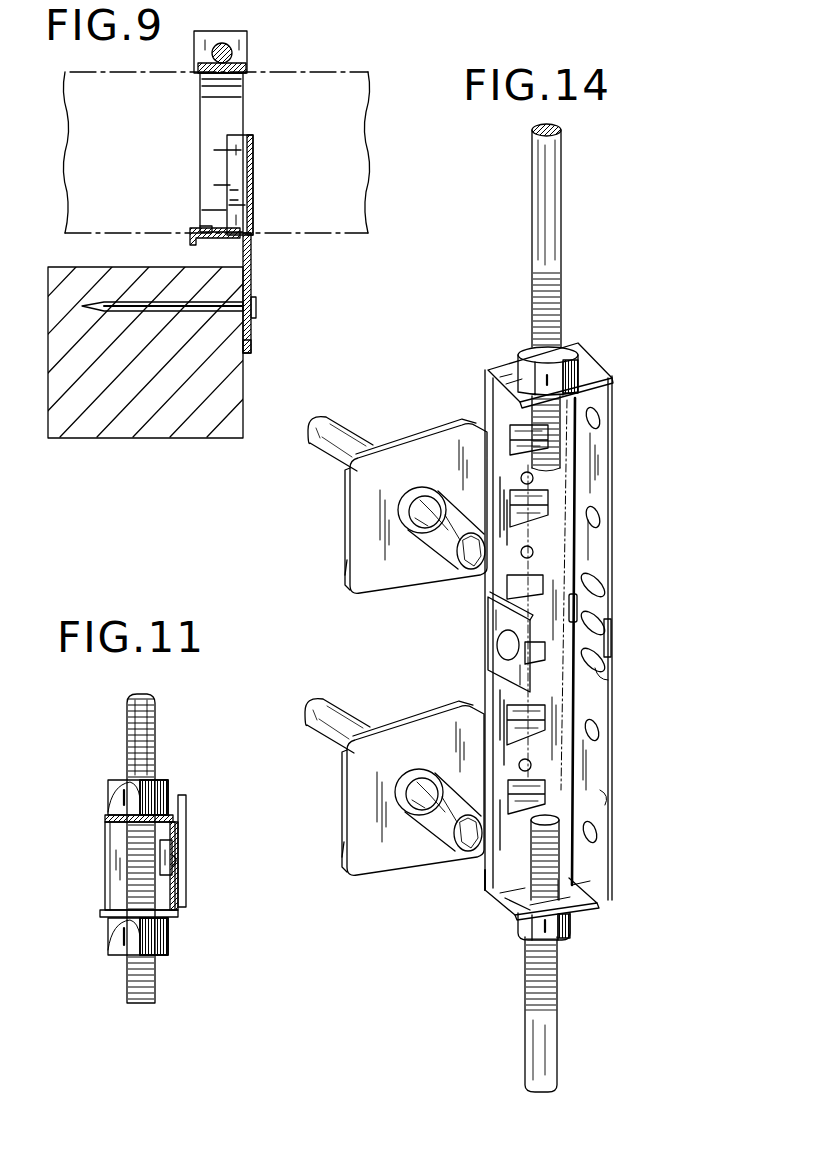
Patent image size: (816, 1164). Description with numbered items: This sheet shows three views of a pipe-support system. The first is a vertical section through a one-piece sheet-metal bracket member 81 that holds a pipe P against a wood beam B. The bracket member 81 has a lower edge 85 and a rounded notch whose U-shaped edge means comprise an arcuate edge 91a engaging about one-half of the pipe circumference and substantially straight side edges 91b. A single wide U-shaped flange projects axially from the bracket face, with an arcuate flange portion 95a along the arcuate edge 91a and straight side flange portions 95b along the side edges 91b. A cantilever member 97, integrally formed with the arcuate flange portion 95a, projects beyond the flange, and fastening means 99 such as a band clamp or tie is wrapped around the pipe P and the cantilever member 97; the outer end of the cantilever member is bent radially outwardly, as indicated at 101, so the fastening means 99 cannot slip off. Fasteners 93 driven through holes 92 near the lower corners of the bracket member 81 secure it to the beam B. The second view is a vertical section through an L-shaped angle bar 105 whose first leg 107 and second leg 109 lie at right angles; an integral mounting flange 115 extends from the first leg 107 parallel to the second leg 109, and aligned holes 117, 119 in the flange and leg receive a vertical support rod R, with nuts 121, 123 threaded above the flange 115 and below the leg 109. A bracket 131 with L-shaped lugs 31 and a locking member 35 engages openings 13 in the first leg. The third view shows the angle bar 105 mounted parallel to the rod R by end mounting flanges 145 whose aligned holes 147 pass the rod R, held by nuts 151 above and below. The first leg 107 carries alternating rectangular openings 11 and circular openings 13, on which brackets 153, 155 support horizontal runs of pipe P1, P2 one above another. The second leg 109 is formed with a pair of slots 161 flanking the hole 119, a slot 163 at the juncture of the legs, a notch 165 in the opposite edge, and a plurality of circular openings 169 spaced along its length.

In FIG. 9, the pipe P is at (312, 72).
In FIG. 9, the fastening means 99 is at (236, 31).
In FIG. 9, the side flange portions 95b is at (243, 165).
In FIG. 9, the side edges 91b is at (253, 150).
In FIG. 9, the arcuate flange portion 95a is at (238, 192).
In FIG. 9, the cantilever member 97 is at (205, 230).
In FIG. 9, the arcuate edge 91a is at (253, 205).
In FIG. 9, the bent outer end of cantilever member 101 is at (190, 240).
In FIG. 9, the bracket member 81 is at (252, 262).
In FIG. 9, the wood beam B is at (243, 392).
In FIG. 9, the holes 92 is at (256, 320).
In FIG. 9, the fasteners 93 is at (256, 305).
In FIG. 9, the lower edge 85 is at (252, 352).
In FIG. 11, the support rod R is at (155, 735).
In FIG. 14, the support rod R is at (562, 235).
In FIG. 11, the hole in mounting flange 117 is at (133, 808).
In FIG. 14, the hole in mounting flange 117 is at (488, 612).
In FIG. 11, the nut 121 is at (165, 805).
In FIG. 11, the mounting flange 115 is at (105, 818).
In FIG. 14, the mounting flange 115 is at (498, 650).
In FIG. 11, the bracket 131 is at (186, 813).
In FIG. 11, the circular openings 13 is at (168, 852).
In FIG. 14, the circular openings 13 is at (522, 556).
In FIG. 11, the mounting flanges 145 is at (107, 870).
In FIG. 14, the mounting flanges 145 is at (600, 368).
In FIG. 11, the locking member 35 is at (178, 868).
In FIG. 11, the first leg 107 is at (178, 886).
In FIG. 14, the first leg 107 is at (492, 885).
In FIG. 11, the second leg 109 is at (100, 913).
In FIG. 14, the second leg 109 is at (600, 795).
In FIG. 11, the hole in second leg 119 is at (122, 935).
In FIG. 14, the hole in second leg 119 is at (611, 632).
In FIG. 11, the nut 123 is at (168, 940).
In FIG. 14, the nuts 151 is at (578, 358).
In FIG. 14, the angle bar 105 is at (607, 463).
In FIG. 14, the circular openings 169 is at (599, 420).
In FIG. 14, the slots 161 is at (601, 583).
In FIG. 14, the slot 163 is at (578, 606).
In FIG. 14, the notch 165 is at (601, 648).
In FIG. 14, the L-shaped lugs 31 is at (512, 438).
In FIG. 14, the rectangular openings 11 is at (543, 583).
In FIG. 14, the pipe P1 is at (362, 442).
In FIG. 14, the pipe P2 is at (357, 722).
In FIG. 14, the bracket 153 is at (337, 577).
In FIG. 14, the bracket 155 is at (334, 859).
In FIG. 14, the holes in end flanges 147 is at (512, 912).